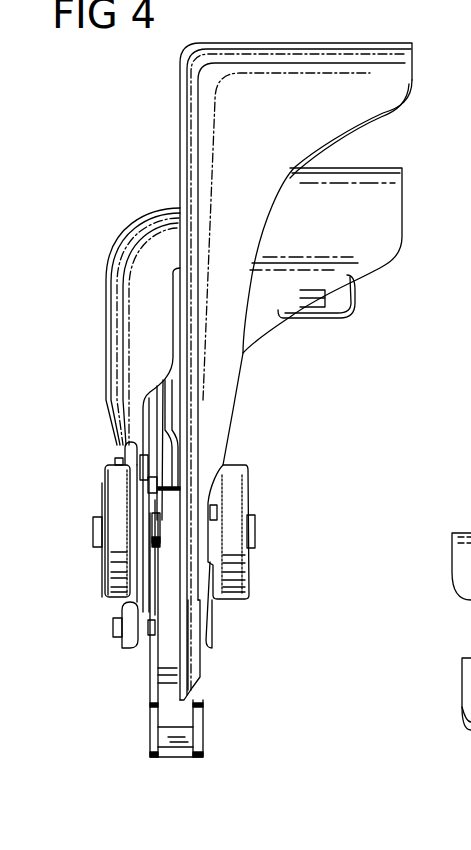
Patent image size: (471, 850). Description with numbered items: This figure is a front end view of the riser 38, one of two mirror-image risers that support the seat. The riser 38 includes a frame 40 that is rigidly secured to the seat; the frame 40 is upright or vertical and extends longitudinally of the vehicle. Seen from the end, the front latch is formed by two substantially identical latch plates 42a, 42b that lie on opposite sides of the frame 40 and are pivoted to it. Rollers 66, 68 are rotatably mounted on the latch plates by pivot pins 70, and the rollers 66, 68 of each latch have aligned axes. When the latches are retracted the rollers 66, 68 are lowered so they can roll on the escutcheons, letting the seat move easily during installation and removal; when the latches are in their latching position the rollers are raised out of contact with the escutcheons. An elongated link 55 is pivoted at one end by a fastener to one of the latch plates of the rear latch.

The riser 38 is at (166, 88).
The frame 40 is at (200, 167).
The roller 66 is at (250, 502).
The roller 68 is at (105, 477).
The pivot pin 70 is at (255, 545).
The elongated link 55 is at (125, 647).
The latch plate 42a is at (203, 680).
The latch plate 42b is at (150, 690).